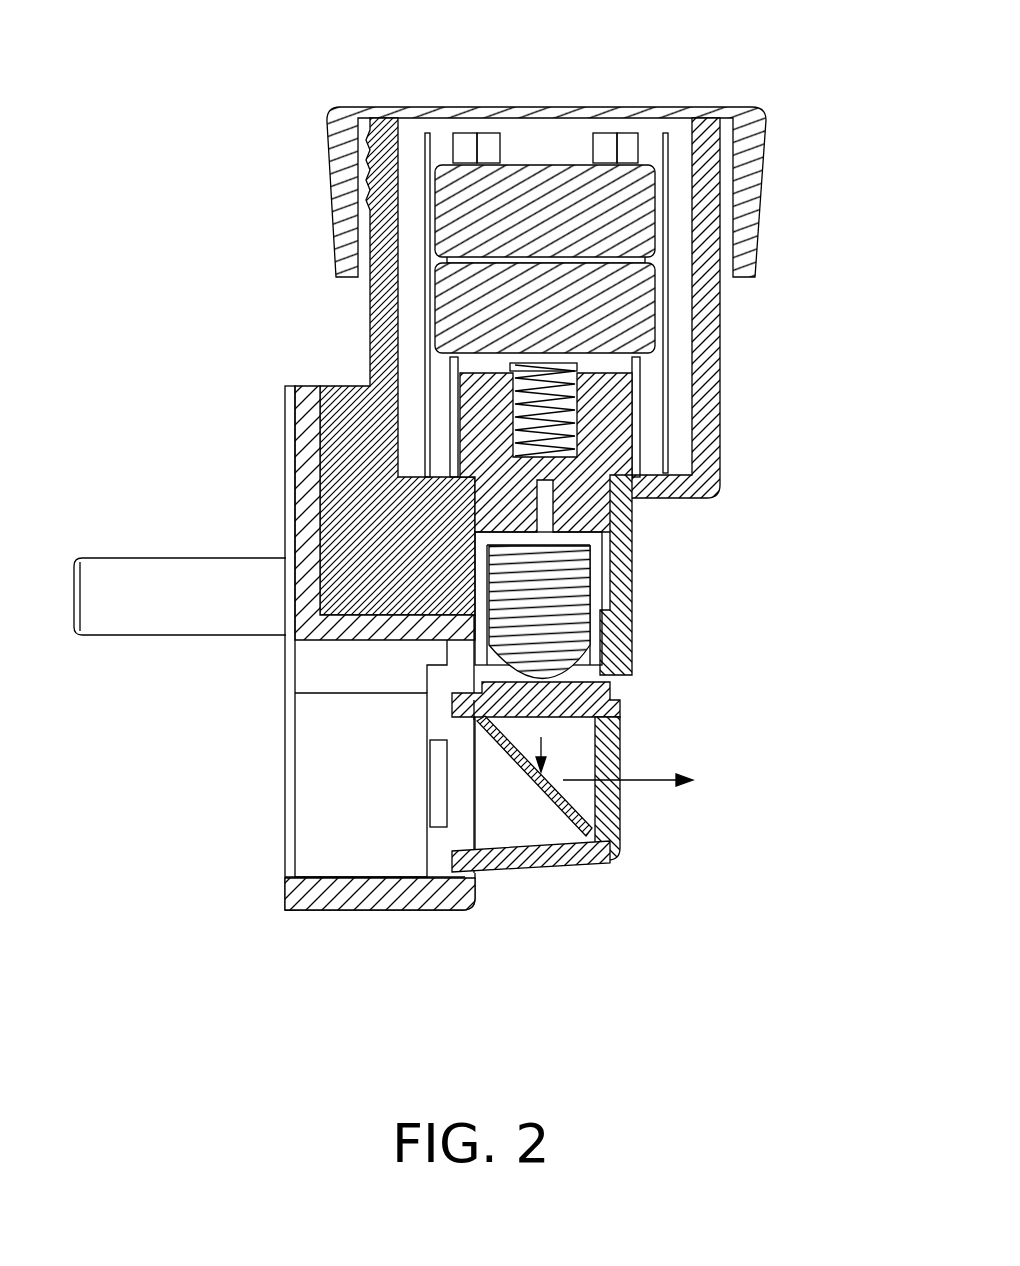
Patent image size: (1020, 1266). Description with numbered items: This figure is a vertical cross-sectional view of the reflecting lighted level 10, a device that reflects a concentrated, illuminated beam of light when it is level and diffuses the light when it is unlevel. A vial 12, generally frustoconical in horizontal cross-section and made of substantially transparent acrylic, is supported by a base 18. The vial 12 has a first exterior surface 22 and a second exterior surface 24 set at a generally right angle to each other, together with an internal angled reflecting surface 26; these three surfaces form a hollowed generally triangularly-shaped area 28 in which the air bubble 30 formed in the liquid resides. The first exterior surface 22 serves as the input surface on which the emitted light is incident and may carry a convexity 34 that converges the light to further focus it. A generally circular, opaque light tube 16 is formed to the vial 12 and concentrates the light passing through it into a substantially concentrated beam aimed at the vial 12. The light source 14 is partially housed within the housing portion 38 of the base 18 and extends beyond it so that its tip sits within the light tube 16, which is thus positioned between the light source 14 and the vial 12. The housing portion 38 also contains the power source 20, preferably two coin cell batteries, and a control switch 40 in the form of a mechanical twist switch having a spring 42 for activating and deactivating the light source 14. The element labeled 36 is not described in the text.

The reflecting lighted level 10 is at (100, 300).
The vial 12 is at (537, 895).
The light source 14 is at (660, 692).
The light tube 16 is at (650, 608).
The base 18 is at (245, 738).
The power source 20 is at (703, 213).
The first exterior surface 22 is at (622, 712).
The second exterior surface 24 is at (622, 806).
The internal angled reflecting surface 26 is at (617, 830).
The hollowed generally triangularly-shaped area 28 is at (477, 718).
The air bubble 30 is at (580, 765).
The convexity 34 is at (605, 668).
The actuator shaft 36 is at (130, 578).
The housing portion 38 is at (712, 472).
The control switch 40 is at (602, 125).
The spring 42 is at (580, 412).